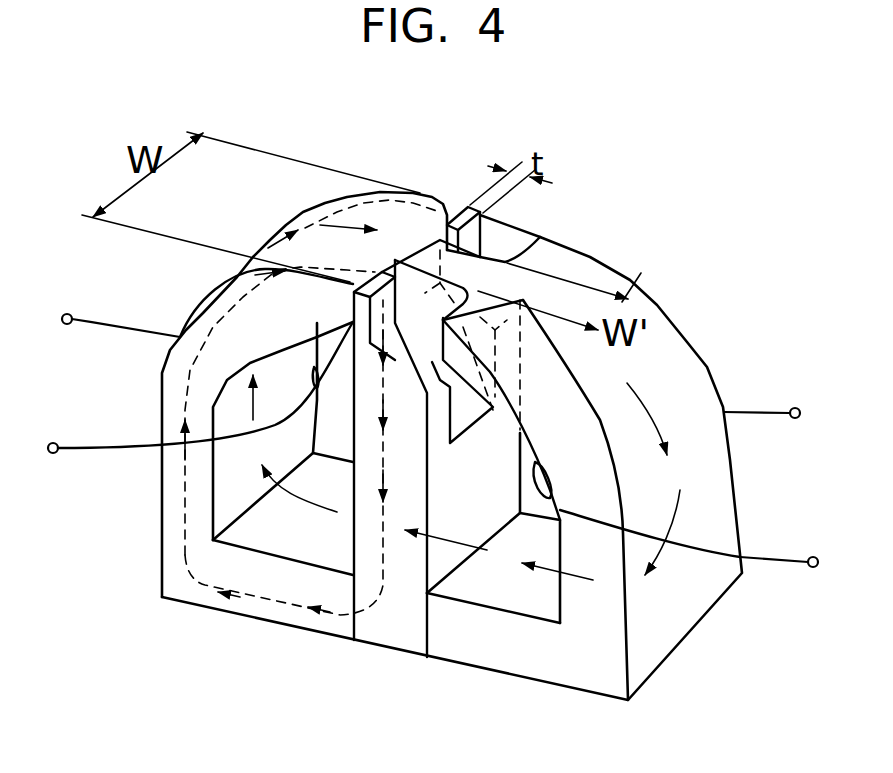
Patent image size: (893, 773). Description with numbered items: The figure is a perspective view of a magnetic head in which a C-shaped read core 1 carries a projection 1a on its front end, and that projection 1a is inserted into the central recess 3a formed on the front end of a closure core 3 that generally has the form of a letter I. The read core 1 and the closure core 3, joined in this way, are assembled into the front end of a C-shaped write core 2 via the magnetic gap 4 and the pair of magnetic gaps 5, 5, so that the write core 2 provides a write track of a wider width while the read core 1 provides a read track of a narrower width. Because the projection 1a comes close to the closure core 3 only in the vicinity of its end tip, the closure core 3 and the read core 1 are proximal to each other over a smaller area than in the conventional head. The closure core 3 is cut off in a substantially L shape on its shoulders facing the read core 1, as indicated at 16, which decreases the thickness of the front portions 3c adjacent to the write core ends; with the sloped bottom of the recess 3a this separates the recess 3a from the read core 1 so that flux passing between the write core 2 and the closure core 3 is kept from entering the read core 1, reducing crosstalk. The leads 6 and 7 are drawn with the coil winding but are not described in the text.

The read core 1 is at (677, 335).
The projection 1a is at (473, 228).
The write core 2 is at (217, 295).
The closure core 3 is at (365, 527).
The central recess 3a is at (463, 415).
The front portion 3c is at (466, 206).
The magnetic gap 4 is at (418, 240).
The magnetic gaps 5 is at (363, 268).
The coil terminal 6 is at (765, 560).
The coil terminal 7 is at (112, 448).
The L-shaped cut-off 16 is at (410, 363).